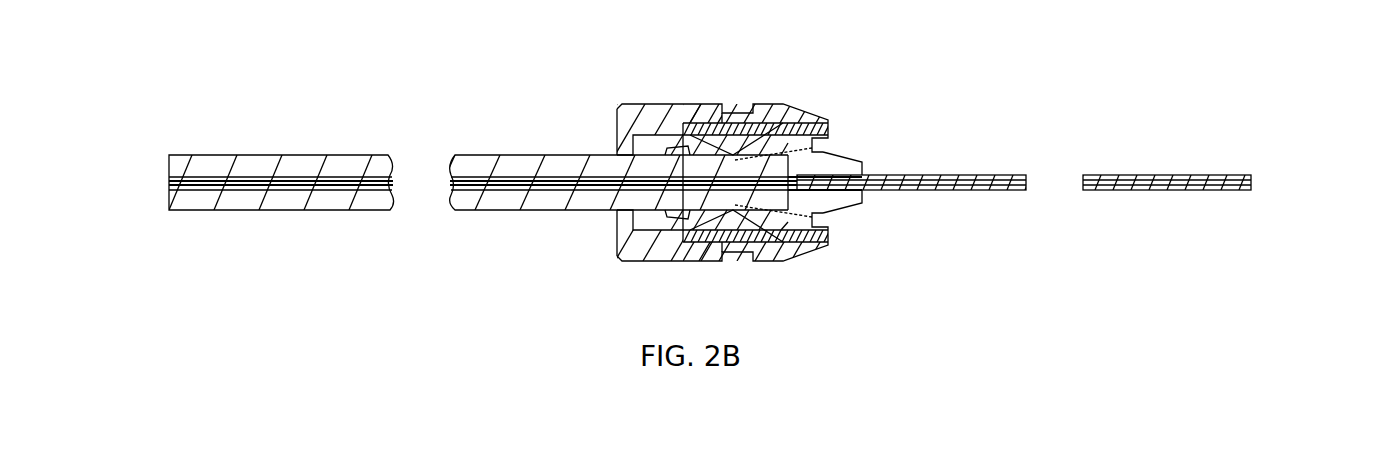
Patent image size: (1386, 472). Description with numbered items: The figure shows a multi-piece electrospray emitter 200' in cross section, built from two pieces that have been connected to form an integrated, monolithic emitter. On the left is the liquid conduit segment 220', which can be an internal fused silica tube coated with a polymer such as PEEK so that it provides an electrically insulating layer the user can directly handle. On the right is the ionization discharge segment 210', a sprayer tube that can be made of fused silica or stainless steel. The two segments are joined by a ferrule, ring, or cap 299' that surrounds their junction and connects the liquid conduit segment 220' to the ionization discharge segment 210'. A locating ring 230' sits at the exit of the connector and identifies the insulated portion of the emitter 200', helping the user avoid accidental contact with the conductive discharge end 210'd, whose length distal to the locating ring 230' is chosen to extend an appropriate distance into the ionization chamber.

The multi-piece electrospray emitter 200' is at (531, 155).
The liquid conduit segment 220' is at (492, 216).
The ferrule, ring, or cap 299' is at (740, 147).
The locating ring 230' is at (840, 207).
The ionization discharge segment 210' is at (911, 139).
The discharge end 210'd is at (1194, 134).